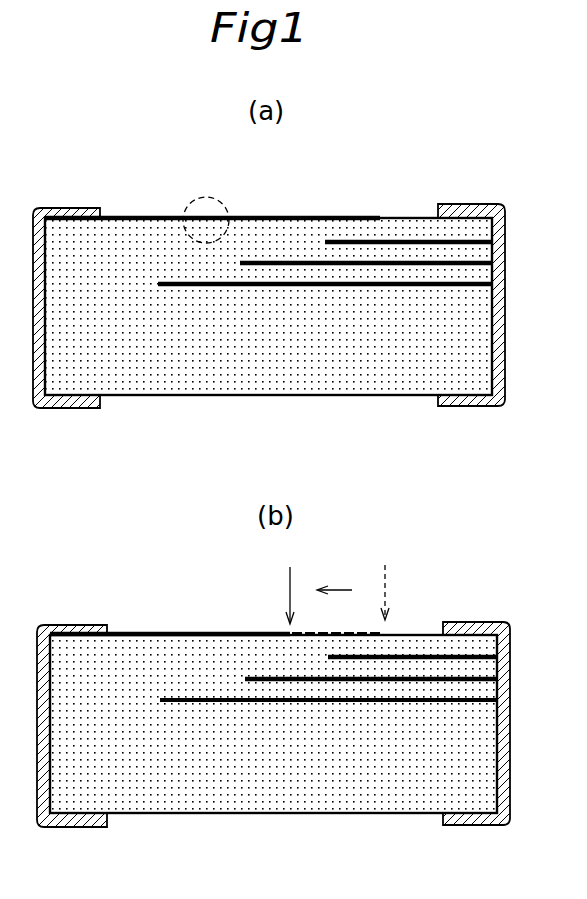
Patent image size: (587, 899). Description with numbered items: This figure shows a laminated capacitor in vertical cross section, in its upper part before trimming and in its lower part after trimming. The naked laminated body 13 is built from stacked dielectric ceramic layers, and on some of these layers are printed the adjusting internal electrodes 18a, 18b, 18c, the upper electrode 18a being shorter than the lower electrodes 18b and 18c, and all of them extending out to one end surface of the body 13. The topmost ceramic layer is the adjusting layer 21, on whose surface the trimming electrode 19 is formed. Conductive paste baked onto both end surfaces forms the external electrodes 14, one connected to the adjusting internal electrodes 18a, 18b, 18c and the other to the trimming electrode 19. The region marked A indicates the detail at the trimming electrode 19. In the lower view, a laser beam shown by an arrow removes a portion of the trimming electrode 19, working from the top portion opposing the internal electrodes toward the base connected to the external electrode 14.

The naked laminated body 13 is at (326, 380).
The external electrode 14 is at (465, 210).
The adjusting internal electrode 18a is at (383, 240).
The adjusting internal electrode 18b is at (290, 262).
The adjusting internal electrode 18c is at (163, 248).
The trimming electrode 19 is at (253, 216).
The adjusting layer 21 is at (363, 230).
The detail region A is at (208, 196).